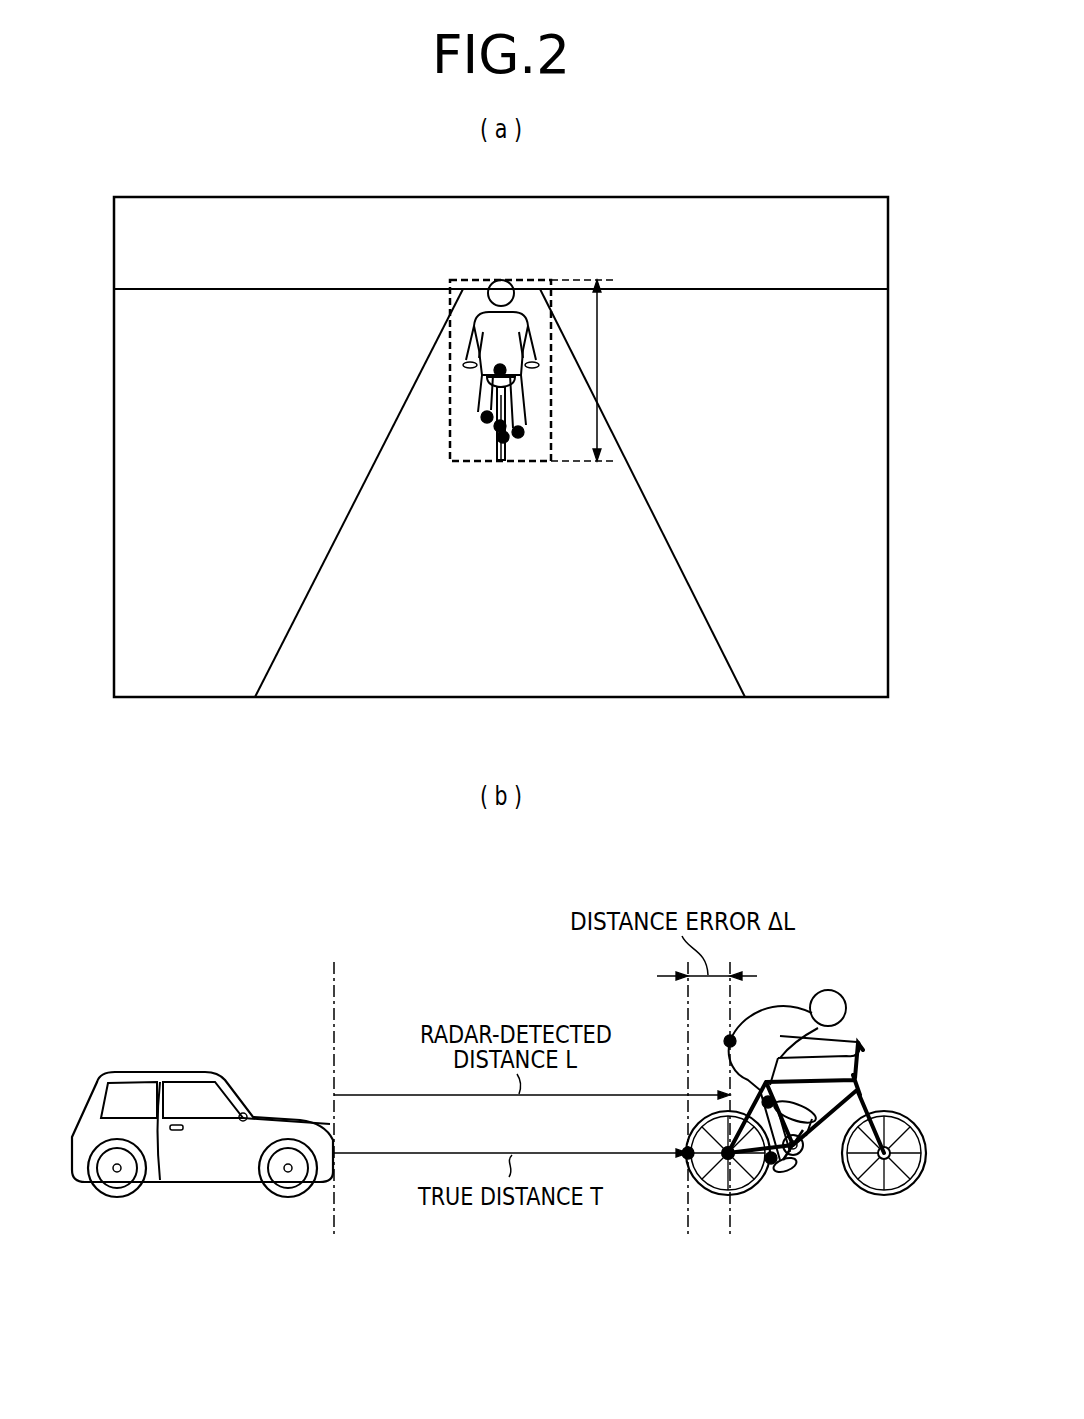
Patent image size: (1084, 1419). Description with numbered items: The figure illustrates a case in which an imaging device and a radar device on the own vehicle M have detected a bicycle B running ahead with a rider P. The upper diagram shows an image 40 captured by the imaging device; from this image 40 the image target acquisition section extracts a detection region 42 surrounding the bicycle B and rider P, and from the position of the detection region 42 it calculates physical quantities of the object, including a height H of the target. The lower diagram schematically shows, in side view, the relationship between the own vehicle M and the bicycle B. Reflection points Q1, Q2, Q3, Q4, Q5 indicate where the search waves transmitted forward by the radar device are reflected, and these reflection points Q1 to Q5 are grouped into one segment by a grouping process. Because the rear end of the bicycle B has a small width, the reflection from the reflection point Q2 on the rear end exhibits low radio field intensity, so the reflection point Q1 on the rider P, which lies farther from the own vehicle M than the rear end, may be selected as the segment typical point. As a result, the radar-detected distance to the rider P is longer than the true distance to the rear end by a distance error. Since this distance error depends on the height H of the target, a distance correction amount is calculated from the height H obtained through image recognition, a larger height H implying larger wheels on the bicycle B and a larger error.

The image 40 is at (785, 197).
The detection region 42 is at (535, 280).
The height of the target H is at (587, 370).
The rider P is at (488, 278).
The bicycle B is at (496, 450).
The reflection point Q1 is at (500, 370).
The reflection point Q2 is at (500, 428).
The reflection point Q3 is at (518, 440).
The reflection point Q4 is at (487, 417).
The reflection point Q5 is at (505, 440).
The own vehicle M is at (123, 1072).